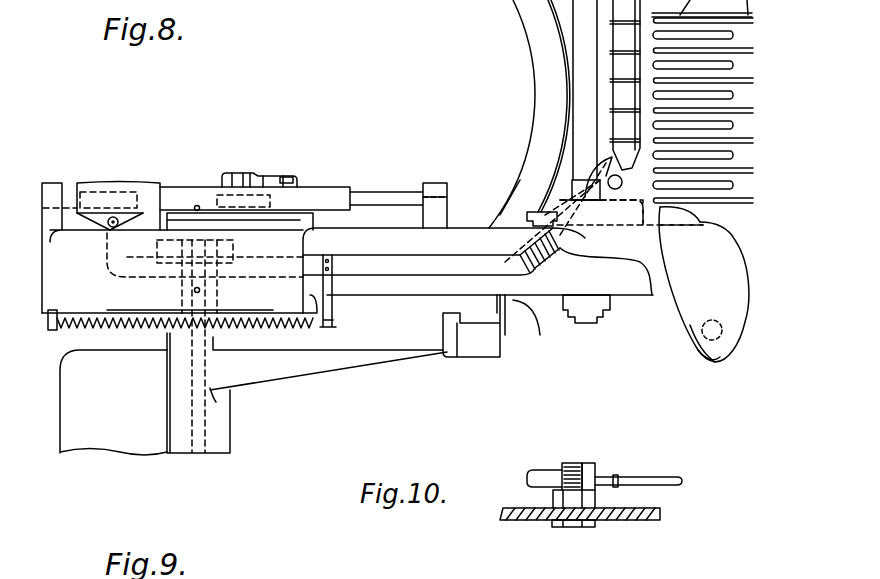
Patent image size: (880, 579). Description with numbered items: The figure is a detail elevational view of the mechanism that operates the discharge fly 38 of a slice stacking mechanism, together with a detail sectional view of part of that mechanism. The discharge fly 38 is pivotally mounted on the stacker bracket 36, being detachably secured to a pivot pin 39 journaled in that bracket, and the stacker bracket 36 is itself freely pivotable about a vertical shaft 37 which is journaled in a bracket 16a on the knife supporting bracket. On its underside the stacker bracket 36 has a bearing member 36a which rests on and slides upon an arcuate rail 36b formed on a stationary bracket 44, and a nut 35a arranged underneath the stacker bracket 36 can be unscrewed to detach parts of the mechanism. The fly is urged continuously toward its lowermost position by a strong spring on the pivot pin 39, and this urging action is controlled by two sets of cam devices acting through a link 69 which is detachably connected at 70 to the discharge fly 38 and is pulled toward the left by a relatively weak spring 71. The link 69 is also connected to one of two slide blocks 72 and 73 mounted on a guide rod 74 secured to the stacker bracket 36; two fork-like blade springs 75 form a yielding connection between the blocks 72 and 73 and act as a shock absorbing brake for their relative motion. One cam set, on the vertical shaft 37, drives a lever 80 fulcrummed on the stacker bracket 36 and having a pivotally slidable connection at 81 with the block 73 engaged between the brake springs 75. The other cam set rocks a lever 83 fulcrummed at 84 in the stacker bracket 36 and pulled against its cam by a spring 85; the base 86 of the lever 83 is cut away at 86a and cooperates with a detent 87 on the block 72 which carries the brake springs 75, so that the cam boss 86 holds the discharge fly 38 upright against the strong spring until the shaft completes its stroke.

In FIG. 8, the bracket 16a is at (107, 437).
In FIG. 8, the nut 35a is at (597, 324).
In FIG. 8, the stacker bracket 36 is at (452, 242).
In FIG. 10, the stacker bracket 36 is at (510, 521).
In FIG. 8, the bearing member 36a is at (531, 326).
In FIG. 8, the arcuate rail 36b is at (483, 345).
In FIG. 8, the vertical shaft 37 is at (205, 440).
In FIG. 8, the discharge fly 38 is at (718, 91).
In FIG. 8, the pivot pin 39 is at (699, 349).
In FIG. 8, the stationary bracket 44 is at (320, 367).
In FIG. 8, the link 69 is at (422, 267).
In FIG. 8, the connection 70 is at (632, 245).
In FIG. 8, the spring 71 is at (80, 328).
In FIG. 8, the slide block 72 is at (96, 184).
In FIG. 8, the slide block 73 is at (277, 181).
In FIG. 8, the guide rod 74 is at (400, 195).
In FIG. 8, the blade springs 75 is at (340, 192).
In FIG. 8, the lever 80 is at (307, 180).
In FIG. 8, the pivotally slidable connection 81 is at (238, 176).
In FIG. 10, the lever 83 is at (668, 488).
In FIG. 10, the fulcrum 84 is at (580, 521).
In FIG. 10, the spring 85 is at (618, 480).
In FIG. 10, the base 86 is at (593, 467).
In FIG. 10, the cut away 86a is at (580, 470).
In FIG. 10, the detent 87 is at (538, 470).